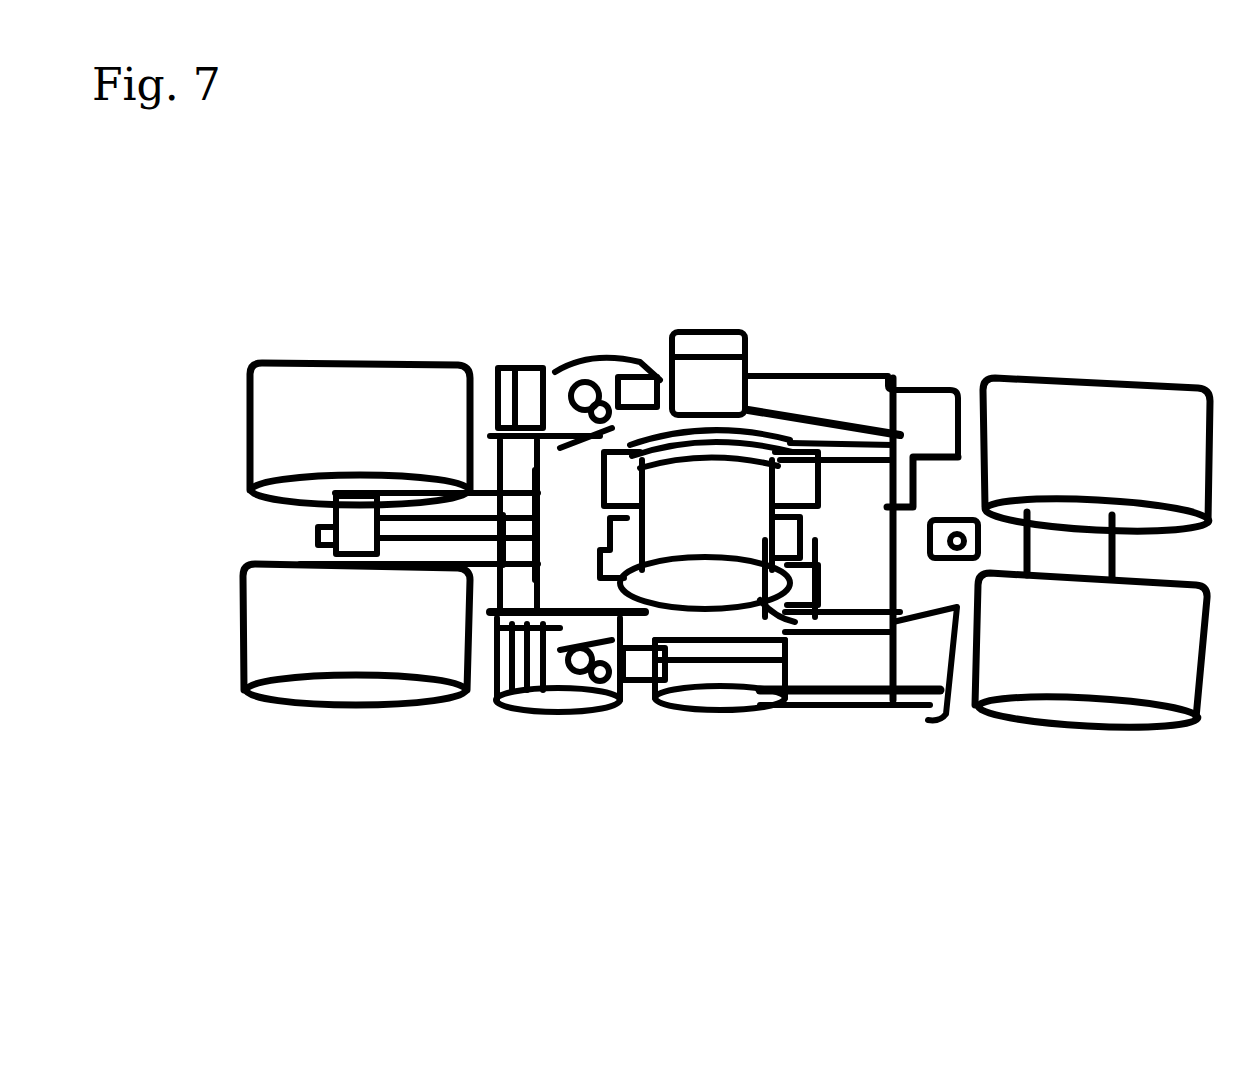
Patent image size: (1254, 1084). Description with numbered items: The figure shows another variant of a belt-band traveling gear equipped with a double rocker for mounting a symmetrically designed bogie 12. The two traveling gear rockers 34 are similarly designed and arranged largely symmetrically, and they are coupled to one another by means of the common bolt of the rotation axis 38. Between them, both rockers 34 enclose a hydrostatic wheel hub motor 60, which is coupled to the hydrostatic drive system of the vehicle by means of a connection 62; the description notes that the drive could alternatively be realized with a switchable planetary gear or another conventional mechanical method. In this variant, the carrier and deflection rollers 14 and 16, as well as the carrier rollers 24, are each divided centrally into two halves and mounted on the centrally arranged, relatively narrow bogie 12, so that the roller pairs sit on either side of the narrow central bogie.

The bogie 12 is at (952, 487).
The carrier and deflection roller 14 is at (1046, 402).
The carrier and deflection roller 16 is at (352, 372).
The carrier roller 24 is at (510, 372).
The traveling gear rocker 34 is at (828, 392).
The rotation axis 38 is at (868, 492).
The hydrostatic wheel hub motor 60 is at (660, 473).
The connection 62 is at (712, 396).